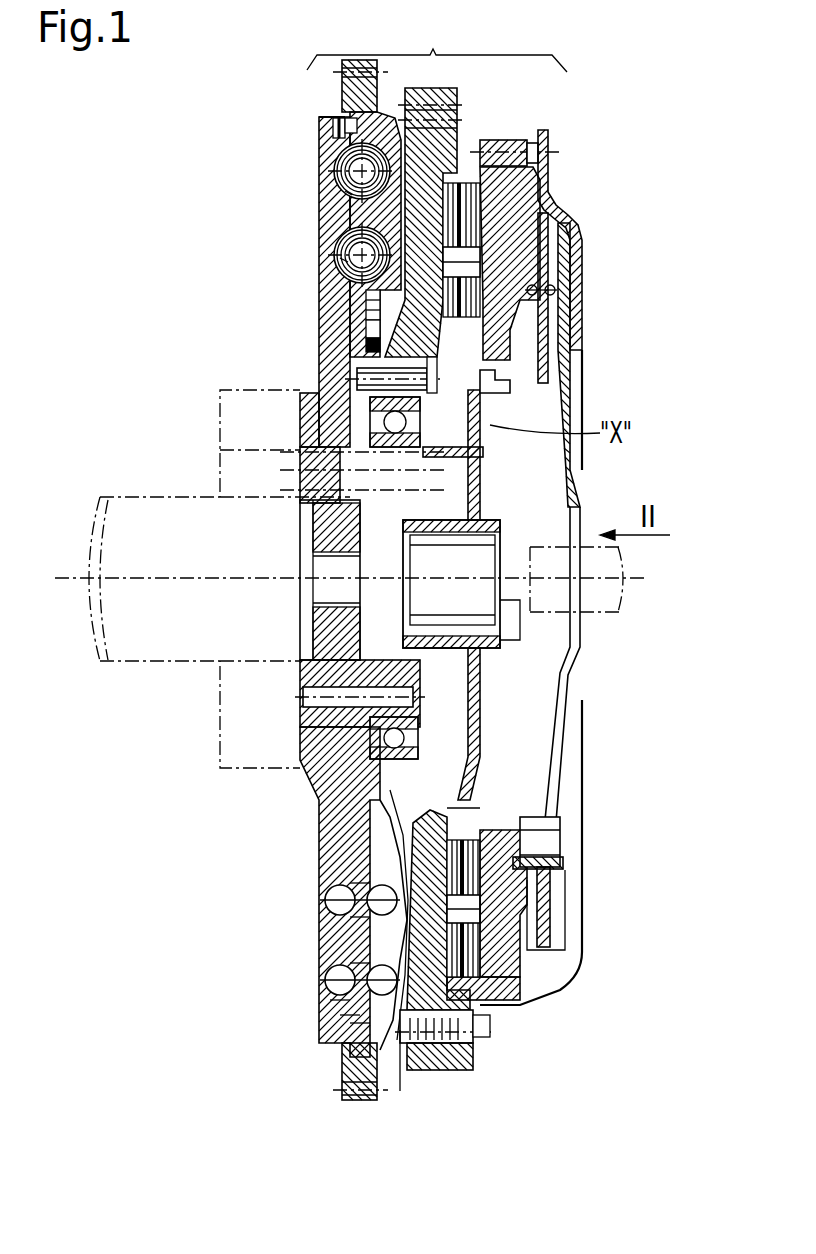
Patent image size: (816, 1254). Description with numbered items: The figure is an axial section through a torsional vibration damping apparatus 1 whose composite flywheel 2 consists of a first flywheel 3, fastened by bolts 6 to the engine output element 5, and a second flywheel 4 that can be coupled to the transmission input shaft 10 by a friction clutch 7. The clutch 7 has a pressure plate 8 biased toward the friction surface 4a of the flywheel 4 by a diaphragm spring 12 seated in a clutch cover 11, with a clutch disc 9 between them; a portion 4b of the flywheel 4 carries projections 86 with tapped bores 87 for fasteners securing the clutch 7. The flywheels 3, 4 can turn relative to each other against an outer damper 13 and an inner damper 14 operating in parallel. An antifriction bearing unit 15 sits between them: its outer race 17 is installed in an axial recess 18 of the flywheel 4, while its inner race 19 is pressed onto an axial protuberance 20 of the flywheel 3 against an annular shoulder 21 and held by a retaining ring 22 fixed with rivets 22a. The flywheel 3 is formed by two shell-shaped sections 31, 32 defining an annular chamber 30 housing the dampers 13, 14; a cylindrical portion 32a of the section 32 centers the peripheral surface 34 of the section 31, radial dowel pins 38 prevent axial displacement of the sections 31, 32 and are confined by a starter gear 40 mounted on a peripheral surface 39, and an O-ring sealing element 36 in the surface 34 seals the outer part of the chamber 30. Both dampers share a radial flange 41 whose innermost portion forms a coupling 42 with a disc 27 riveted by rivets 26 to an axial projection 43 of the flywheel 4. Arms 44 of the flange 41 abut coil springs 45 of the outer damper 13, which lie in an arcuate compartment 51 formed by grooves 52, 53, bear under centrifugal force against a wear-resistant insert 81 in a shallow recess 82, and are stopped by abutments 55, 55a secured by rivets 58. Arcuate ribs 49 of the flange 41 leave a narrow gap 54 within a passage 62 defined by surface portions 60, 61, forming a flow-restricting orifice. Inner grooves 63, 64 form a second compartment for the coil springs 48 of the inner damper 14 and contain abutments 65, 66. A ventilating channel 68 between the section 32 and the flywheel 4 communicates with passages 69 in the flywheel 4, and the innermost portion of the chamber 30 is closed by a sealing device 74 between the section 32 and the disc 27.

The torsional vibration damping apparatus 1 is at (568, 83).
The composite flywheel 2 is at (437, 43).
The first flywheel 3 is at (325, 740).
The second flywheel 4 is at (440, 107).
The friction surface 4a is at (507, 202).
The portion of the flywheel 4b is at (538, 167).
The output element 5 is at (125, 623).
The bolts 6 is at (365, 475).
The friction clutch 7 is at (558, 128).
The pressure plate 8 is at (583, 847).
The clutch disc 9 is at (455, 742).
The input shaft 10 is at (600, 603).
The clutch cover 11 is at (568, 890).
The diaphragm spring 12 is at (560, 725).
The outer damper 13 is at (350, 176).
The inner damper 14 is at (350, 250).
The antifriction bearing unit 15 is at (365, 430).
The outer race 17 is at (473, 402).
The axial recess 18 is at (490, 375).
The inner race 19 is at (470, 452).
The axial protuberance 20 is at (320, 690).
The annular shoulder 21 is at (330, 720).
The retaining ring 22 is at (470, 672).
The rivets 22a is at (440, 697).
The rivets 26 is at (380, 410).
The disc 27 is at (390, 440).
The annular chamber 30 is at (335, 337).
The section 31 is at (340, 290).
The section 32 is at (462, 237).
The cylindrical portion 32a is at (333, 122).
The peripheral surface 34 is at (345, 127).
The sealing element 36 is at (362, 128).
The pins 38 is at (322, 115).
The cylindrical peripheral surface 39 is at (355, 1060).
The starter gear 40 is at (352, 92).
The radial flange 41 is at (340, 355).
The coupling 42 is at (360, 350).
The axial projection 43 is at (330, 785).
The arms 44 is at (330, 1000).
The coil springs 45 is at (345, 191).
The coil springs 48 is at (350, 240).
The arcuate ribs 49 is at (345, 215).
The arcuate compartment 51 is at (335, 170).
The arcuate groove 52 is at (350, 177).
The arcuate groove 53 is at (515, 186).
The gap 54 is at (482, 220).
The abutment 55 is at (340, 980).
The abutment 55a is at (470, 955).
The rivets 58 is at (335, 985).
The surface portion 60 is at (330, 950).
The surface portion 61 is at (465, 933).
The passage 62 is at (345, 945).
The arcuate groove 63 is at (340, 258).
The arcuate groove 64 is at (540, 272).
The abutment 65 is at (385, 893).
The abutment 66 is at (513, 863).
The ventilating channel 68 is at (400, 1091).
The passages 69 is at (480, 808).
The sealing device 74 is at (375, 840).
The wear-resistant insert 81 is at (340, 1015).
The recess 82 is at (350, 1023).
The projections 86 is at (420, 1057).
The tapped bores 87 is at (405, 1027).